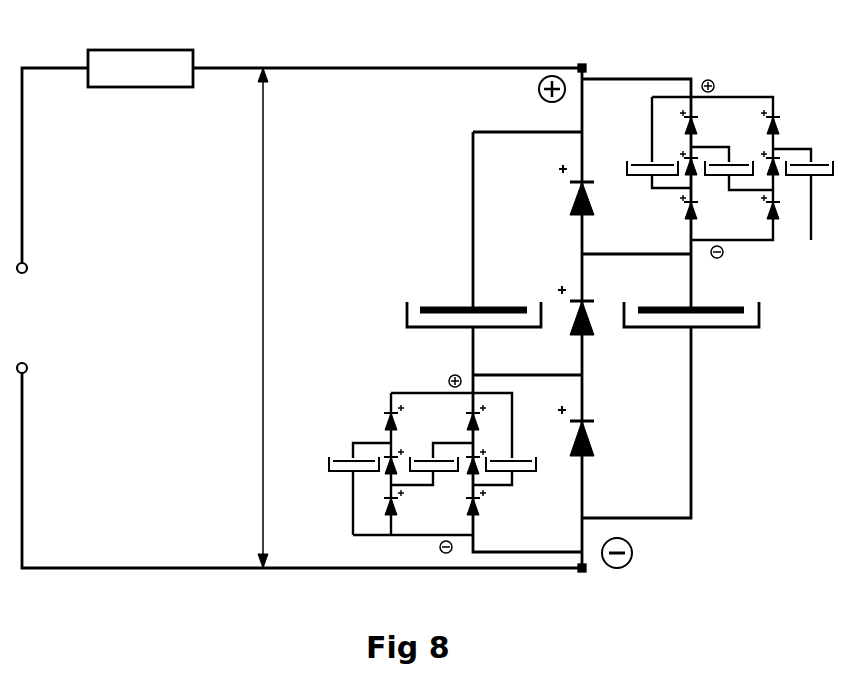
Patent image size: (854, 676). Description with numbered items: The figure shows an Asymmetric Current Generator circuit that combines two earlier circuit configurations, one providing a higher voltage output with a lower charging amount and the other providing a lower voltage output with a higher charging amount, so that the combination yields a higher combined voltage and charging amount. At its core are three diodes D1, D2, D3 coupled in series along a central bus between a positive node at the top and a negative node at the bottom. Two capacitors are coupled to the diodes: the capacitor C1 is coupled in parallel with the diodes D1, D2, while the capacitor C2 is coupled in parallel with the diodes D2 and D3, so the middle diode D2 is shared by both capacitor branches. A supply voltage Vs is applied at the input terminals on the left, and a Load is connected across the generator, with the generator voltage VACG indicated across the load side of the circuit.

The load Load is at (140, 69).
The source voltage terminals Vs is at (23, 318).
The AC generator voltage VACG is at (240, 318).
The diode D1 is at (595, 176).
The diode D2 is at (567, 289).
The diode D3 is at (593, 419).
The capacitor C1 is at (435, 427).
The capacitor C2 is at (728, 229).